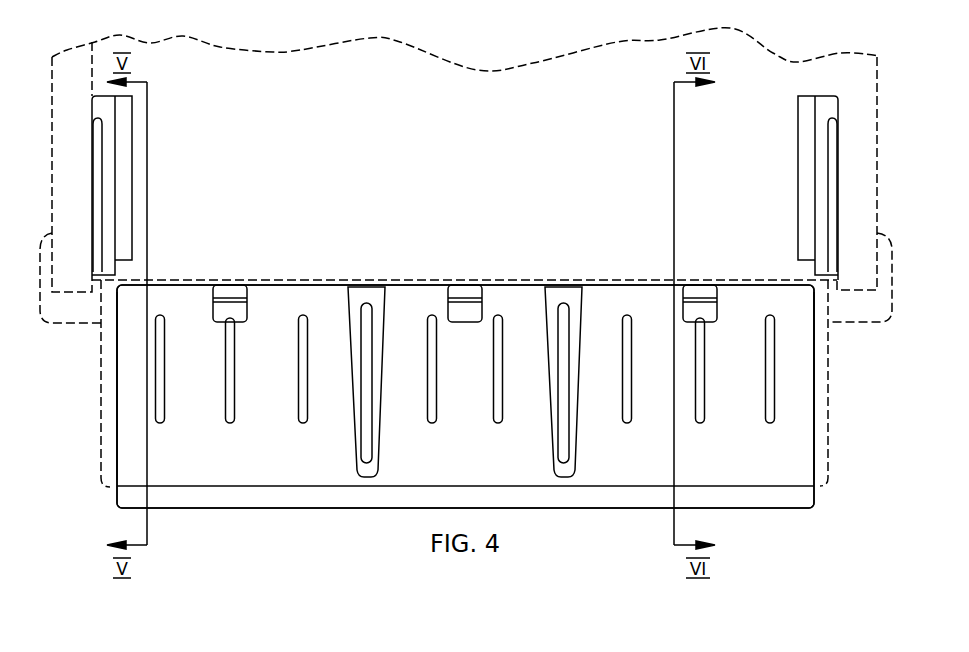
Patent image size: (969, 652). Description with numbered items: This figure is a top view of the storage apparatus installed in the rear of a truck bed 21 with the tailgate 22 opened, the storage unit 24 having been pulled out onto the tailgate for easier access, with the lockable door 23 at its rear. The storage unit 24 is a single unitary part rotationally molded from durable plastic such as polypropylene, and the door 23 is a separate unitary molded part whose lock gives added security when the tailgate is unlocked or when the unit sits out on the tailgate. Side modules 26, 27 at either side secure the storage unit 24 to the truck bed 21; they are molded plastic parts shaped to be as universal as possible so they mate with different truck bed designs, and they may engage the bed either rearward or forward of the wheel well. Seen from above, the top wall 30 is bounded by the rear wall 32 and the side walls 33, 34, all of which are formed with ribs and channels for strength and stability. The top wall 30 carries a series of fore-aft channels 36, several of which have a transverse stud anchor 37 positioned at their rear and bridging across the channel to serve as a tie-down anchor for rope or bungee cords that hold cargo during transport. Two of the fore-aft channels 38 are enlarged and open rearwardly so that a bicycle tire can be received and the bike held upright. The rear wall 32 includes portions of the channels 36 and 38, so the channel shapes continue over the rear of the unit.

The truck bed 21 is at (533, 105).
The tailgate 22 is at (100, 450).
The lockable door 23 is at (768, 508).
The storage unit 24 is at (117, 395).
The side module 26 is at (123, 142).
The side module 27 is at (805, 152).
The top wall 30 is at (798, 450).
The rear wall 32 is at (170, 280).
The side wall 33 is at (118, 346).
The side wall 34 is at (813, 380).
The fore-aft channel 36 is at (164, 407).
The transverse stud anchor 37 is at (230, 297).
The enlarged fore-aft channel 38 is at (367, 400).